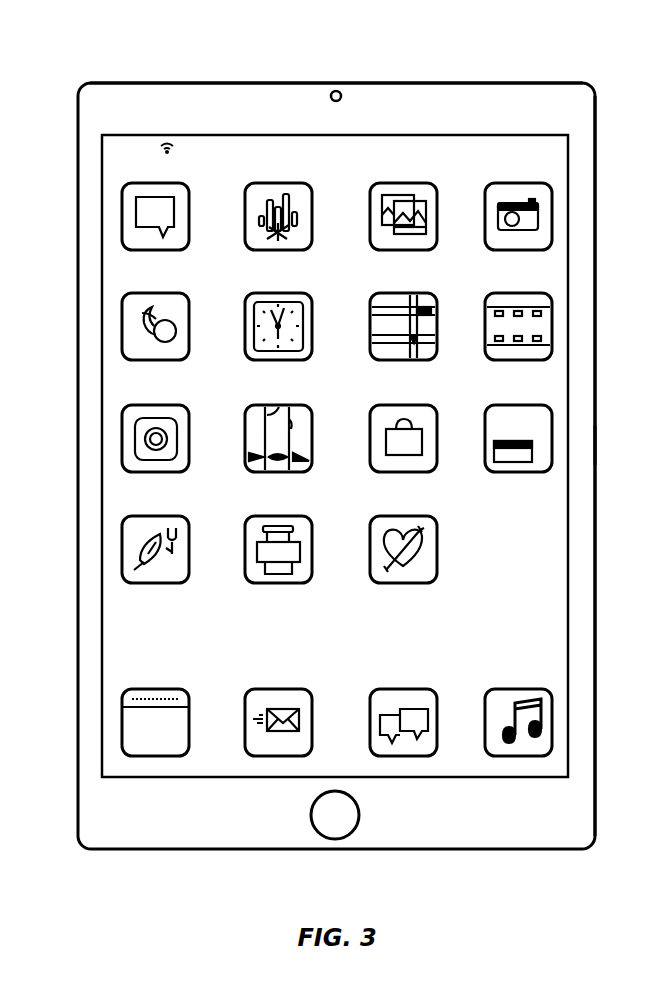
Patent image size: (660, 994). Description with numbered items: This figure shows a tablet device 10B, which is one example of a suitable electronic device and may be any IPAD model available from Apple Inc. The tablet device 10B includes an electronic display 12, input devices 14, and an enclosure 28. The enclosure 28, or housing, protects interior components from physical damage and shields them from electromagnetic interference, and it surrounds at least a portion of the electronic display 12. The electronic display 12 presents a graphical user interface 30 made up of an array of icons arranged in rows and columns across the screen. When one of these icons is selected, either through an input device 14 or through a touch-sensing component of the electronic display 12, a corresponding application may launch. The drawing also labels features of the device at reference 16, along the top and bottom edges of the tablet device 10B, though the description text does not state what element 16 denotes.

The tablet device 10B is at (76, 74).
The electronic display 12 is at (569, 521).
The input devices 14 is at (532, 82).
The housing sidewall 16 is at (190, 82).
The enclosure 28 is at (596, 445).
The graphical user interface 30 is at (545, 582).